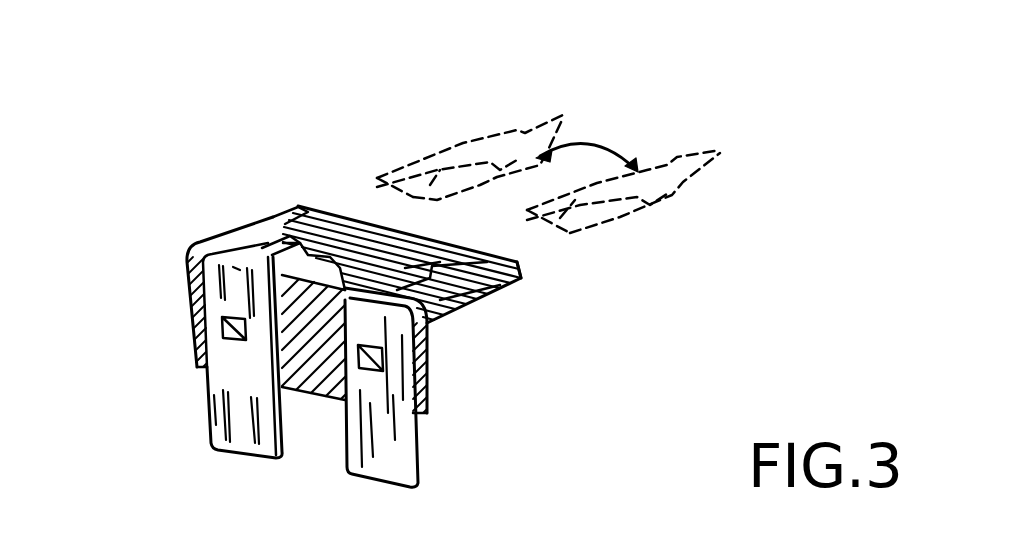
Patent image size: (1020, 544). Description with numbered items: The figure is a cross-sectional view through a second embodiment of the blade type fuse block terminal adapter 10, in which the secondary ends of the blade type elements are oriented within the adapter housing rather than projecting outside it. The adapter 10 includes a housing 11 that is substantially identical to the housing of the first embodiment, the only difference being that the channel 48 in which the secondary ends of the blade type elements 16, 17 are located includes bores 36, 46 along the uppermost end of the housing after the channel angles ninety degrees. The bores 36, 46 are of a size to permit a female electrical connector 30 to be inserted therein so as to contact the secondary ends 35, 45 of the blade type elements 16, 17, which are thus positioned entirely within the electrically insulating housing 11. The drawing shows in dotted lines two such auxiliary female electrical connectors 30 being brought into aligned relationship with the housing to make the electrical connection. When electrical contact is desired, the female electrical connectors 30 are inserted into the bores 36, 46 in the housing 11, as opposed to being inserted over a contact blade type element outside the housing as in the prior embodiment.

The blade type fuse block terminal adapter 10 is at (188, 273).
The housing 11 is at (327, 217).
The blade type element 16 is at (213, 373).
The blade type element 17 is at (402, 408).
The female electrical connector 30 is at (603, 143).
The secondary end 35 is at (275, 244).
The bore 36 is at (287, 215).
The secondary end 45 is at (440, 297).
The bore 46 is at (480, 268).
The channel 48 is at (323, 280).